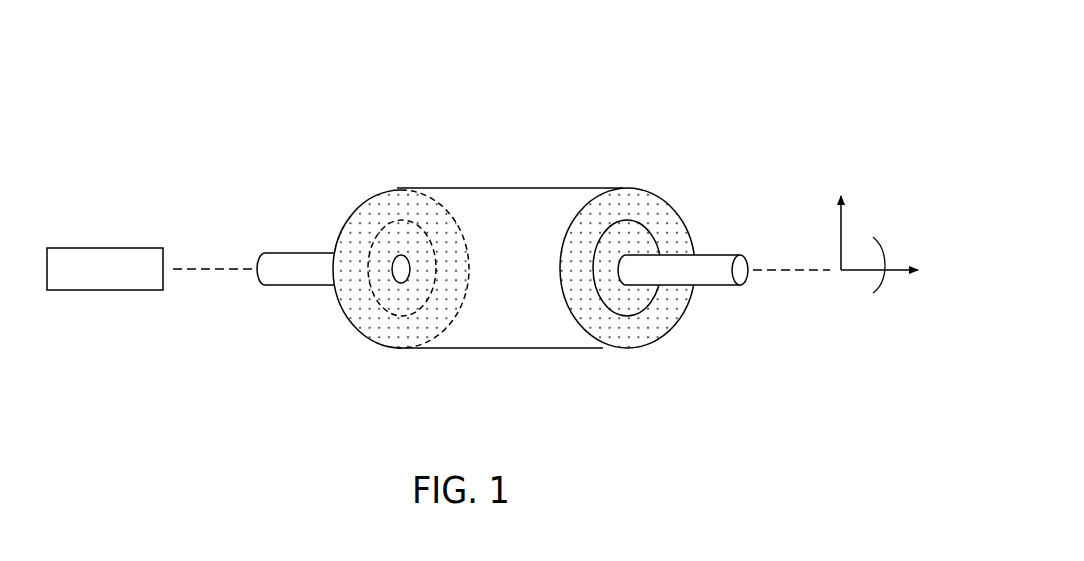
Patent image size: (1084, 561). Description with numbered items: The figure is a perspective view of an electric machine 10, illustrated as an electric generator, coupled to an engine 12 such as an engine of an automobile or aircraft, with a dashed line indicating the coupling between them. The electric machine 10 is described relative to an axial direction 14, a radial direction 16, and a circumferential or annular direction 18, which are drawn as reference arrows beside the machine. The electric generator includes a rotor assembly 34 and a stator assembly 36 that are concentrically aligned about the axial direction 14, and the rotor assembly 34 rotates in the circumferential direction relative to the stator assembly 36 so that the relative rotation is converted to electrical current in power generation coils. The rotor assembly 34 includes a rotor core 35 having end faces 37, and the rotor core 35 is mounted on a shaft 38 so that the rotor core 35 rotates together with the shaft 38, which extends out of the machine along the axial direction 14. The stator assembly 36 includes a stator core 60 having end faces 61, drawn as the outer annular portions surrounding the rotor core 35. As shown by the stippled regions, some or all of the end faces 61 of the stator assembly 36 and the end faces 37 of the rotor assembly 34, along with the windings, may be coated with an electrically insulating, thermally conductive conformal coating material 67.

The electric machine 10 is at (704, 90).
The engine 12 is at (107, 247).
The axial direction 14 is at (213, 268).
The radial direction 16 is at (844, 193).
The circumferential direction 18 is at (856, 240).
The rotor assembly 34 is at (638, 210).
The rotor core 35 is at (656, 229).
The stator assembly 36 is at (517, 176).
The end faces 37 is at (385, 295).
The shaft 38 is at (400, 254).
The stator core 60 is at (670, 190).
The end faces 61 is at (400, 202).
The conformal coating material 67 is at (380, 277).